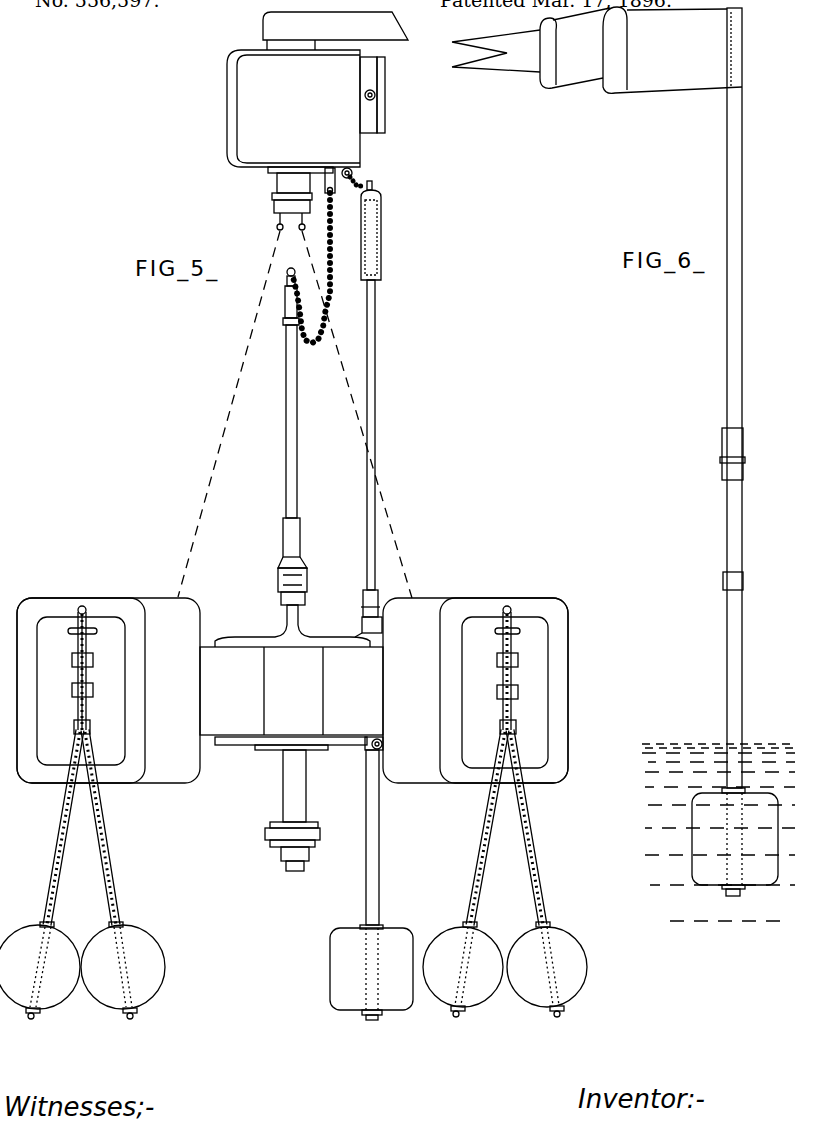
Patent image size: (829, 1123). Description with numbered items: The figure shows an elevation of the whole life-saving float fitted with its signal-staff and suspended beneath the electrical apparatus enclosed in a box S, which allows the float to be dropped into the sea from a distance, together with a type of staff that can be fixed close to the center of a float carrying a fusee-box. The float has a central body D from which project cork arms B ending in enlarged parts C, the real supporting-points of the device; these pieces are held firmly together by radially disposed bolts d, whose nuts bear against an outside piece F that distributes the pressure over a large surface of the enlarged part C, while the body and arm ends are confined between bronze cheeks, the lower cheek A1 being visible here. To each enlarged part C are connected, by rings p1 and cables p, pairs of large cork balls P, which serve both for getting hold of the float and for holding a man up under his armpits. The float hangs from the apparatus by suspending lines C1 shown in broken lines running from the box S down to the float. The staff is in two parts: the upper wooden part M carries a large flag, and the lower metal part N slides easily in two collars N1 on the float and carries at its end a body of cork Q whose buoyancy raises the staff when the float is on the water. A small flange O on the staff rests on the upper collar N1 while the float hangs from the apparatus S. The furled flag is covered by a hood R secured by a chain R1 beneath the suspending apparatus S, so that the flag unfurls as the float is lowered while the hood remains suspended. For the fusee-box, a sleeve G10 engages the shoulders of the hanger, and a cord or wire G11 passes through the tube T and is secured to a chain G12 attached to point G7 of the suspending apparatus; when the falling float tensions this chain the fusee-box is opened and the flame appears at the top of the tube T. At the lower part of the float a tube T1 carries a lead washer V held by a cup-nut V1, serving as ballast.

In FIG. 5, the box S is at (317, 121).
In FIG. 5, the hood R is at (388, 230).
In FIG. 5, the chain R1 is at (372, 186).
In FIG. 5, the point of the suspending apparatus G7 is at (332, 190).
In FIG. 5, the sleeve G10 is at (282, 572).
In FIG. 5, the cord or wire G11 is at (287, 274).
In FIG. 5, the chain G12 is at (325, 296).
In FIG. 5, the upper part of the staff M is at (375, 385).
In FIG. 6, the upper part of the staff M is at (742, 335).
In FIG. 5, the cords C1 is at (395, 540).
In FIG. 5, the tube T is at (297, 455).
In FIG. 5, the flange O is at (364, 606).
In FIG. 6, the flange O is at (745, 462).
In FIG. 5, the collars N1 is at (372, 630).
In FIG. 5, the rings p1 is at (88, 628).
In FIG. 5, the bolts d is at (93, 690).
In FIG. 5, the outside piece F is at (292, 690).
In FIG. 5, the enlarged parts C is at (292, 690).
In FIG. 5, the cork arms B is at (291, 691).
In FIG. 5, the central body D is at (293, 691).
In FIG. 5, the bronze cheek A1 is at (240, 745).
In FIG. 5, the tube T1 is at (283, 785).
In FIG. 5, the lead washer V is at (312, 832).
In FIG. 5, the cup-nut V1 is at (284, 865).
In FIG. 5, the lower part of the staff N is at (379, 872).
In FIG. 6, the lower part of the staff N is at (742, 635).
In FIG. 5, the cables p is at (295, 769).
In FIG. 5, the cork balls P is at (293, 970).
In FIG. 5, the body of cork Q is at (371, 972).
In FIG. 6, the body of cork Q is at (735, 842).